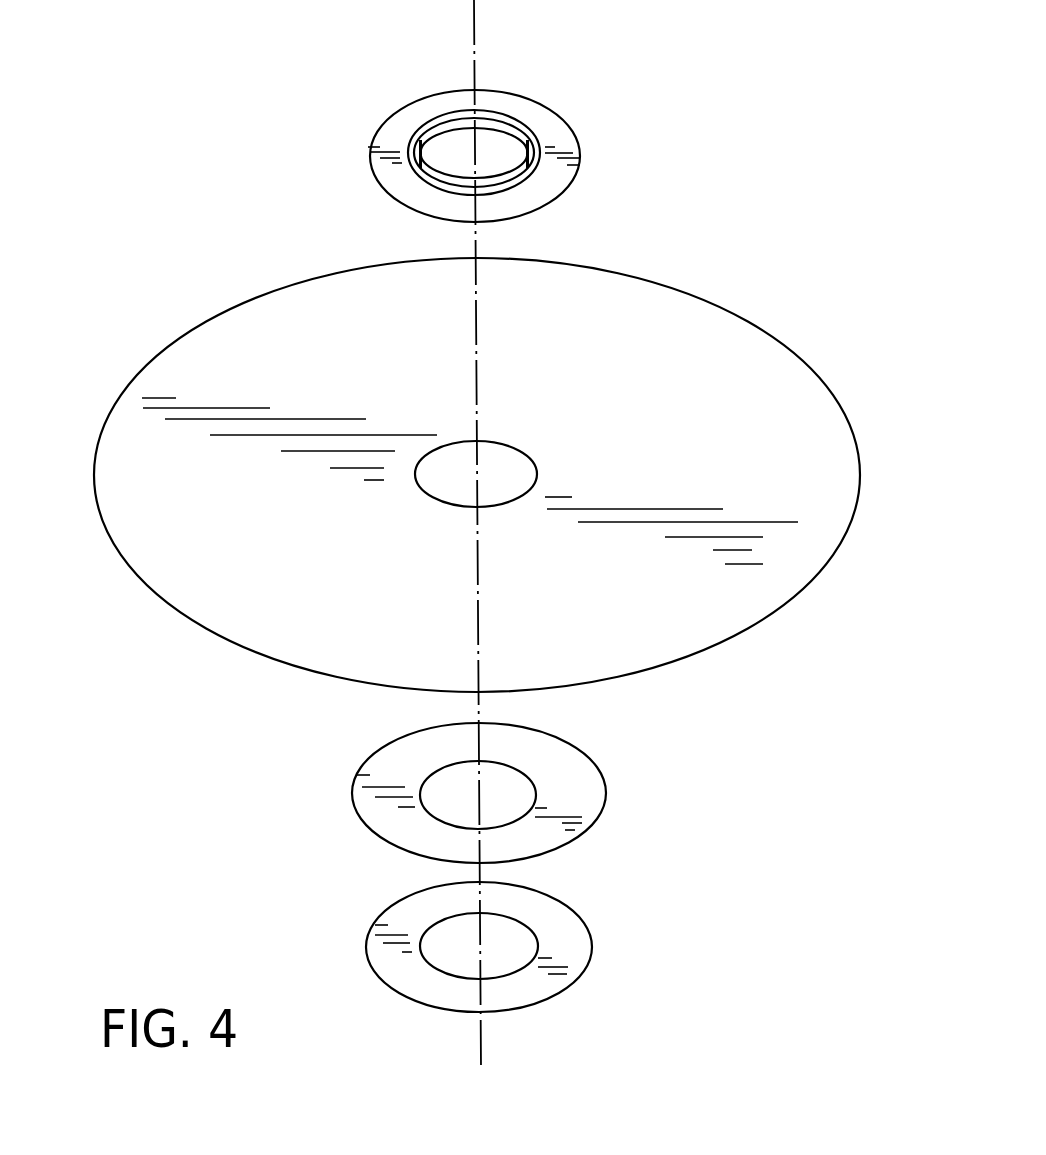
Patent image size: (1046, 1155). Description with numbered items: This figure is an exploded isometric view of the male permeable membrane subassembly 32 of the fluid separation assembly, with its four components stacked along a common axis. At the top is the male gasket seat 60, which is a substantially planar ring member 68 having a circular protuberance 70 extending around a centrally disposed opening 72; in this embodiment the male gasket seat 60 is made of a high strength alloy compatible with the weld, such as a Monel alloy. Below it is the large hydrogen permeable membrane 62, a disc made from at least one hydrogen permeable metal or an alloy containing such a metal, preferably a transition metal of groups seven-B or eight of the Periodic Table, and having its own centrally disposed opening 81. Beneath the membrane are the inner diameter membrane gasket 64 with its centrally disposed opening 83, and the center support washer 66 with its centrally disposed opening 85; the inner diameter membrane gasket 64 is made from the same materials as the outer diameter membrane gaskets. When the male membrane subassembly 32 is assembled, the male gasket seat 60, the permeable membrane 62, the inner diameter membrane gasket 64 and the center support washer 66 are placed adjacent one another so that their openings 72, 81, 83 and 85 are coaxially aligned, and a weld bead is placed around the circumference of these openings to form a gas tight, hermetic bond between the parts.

The male permeable membrane subassembly 32 is at (197, 152).
The male gasket seat 60 is at (582, 152).
The hydrogen permeable membrane 62 is at (802, 402).
The inner diameter membrane gasket 64 is at (565, 805).
The center support washer 66 is at (567, 937).
The planar ring member 68 is at (533, 120).
The circular protuberance 70 is at (423, 133).
The centrally disposed opening 72 is at (493, 140).
The centrally disposed opening 81 is at (512, 467).
The centrally disposed opening 83 is at (502, 785).
The centrally disposed opening 85 is at (513, 937).